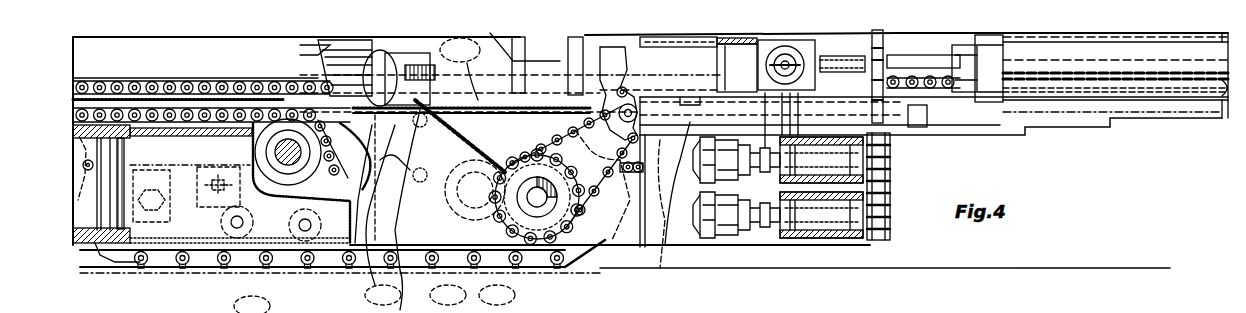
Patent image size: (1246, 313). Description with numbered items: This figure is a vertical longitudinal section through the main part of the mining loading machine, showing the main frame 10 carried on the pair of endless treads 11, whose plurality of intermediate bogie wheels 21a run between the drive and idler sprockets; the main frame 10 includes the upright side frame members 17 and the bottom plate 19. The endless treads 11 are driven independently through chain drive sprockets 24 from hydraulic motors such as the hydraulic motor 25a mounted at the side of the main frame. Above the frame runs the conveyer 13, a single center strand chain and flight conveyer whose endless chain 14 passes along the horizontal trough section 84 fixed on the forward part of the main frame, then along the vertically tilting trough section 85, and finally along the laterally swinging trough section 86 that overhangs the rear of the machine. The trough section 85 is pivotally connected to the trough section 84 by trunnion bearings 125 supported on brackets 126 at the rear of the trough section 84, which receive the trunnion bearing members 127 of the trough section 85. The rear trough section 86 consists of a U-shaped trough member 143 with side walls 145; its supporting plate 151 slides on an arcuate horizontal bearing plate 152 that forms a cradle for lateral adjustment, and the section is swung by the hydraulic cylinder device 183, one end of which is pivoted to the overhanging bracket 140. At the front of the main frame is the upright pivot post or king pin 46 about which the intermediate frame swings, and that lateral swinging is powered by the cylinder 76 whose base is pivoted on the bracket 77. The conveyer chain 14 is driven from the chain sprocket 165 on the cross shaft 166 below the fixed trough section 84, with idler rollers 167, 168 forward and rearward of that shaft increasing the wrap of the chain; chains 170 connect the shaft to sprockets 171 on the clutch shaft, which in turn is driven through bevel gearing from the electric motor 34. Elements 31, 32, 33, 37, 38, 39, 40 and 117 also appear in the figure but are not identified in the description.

The main frame 10 is at (95, 115).
The endless treads 11 is at (160, 270).
The conveyer 13 is at (264, 80).
The endless chain 14 is at (217, 79).
The upright side frame members 17 is at (620, 235).
The bottom plate 19 is at (85, 245).
The bogie wheels 21a is at (278, 246).
The chain drive sprockets 24 is at (560, 205).
The hydraulic motor 25a is at (735, 60).
The small sprocket 31 is at (620, 98).
The support post 32 is at (610, 188).
The upper motor unit 33 is at (715, 245).
The electric motor 34 is at (760, 240).
The chain guide 37 is at (892, 182).
The chain link 38 is at (892, 150).
The hydraulic cylinder 39 is at (820, 215).
The guide rod 40 is at (687, 240).
The upright pivot post or king pin 46 is at (108, 125).
The cylinder 76 is at (332, 60).
The bracket 77 is at (410, 55).
The horizontal trough section 84 is at (192, 36).
The vertically tilting trough section 85 is at (632, 34).
The laterally swinging trough section 86 is at (1155, 118).
The control box 117 is at (272, 50).
The trunnion bearings 125 is at (530, 20).
The brackets 126 is at (252, 304).
The trunnion bearing members 127 is at (409, 211).
The overhanging bracket 140 is at (772, 50).
The U-shaped trough member 143 is at (1187, 303).
The side walls 145 is at (1067, 303).
The supporting plate 151 is at (1065, 120).
The arcuate horizontal bearing plate 152 is at (968, 132).
The chain sprocket 165 is at (211, 85).
The cross shaft 166 is at (305, 206).
The idler roller 167 is at (268, 162).
The idler roller 168 is at (455, 171).
The chains 170 is at (435, 202).
The sprockets 171 is at (436, 209).
The hydraulic cylinder device 183 is at (1200, 87).